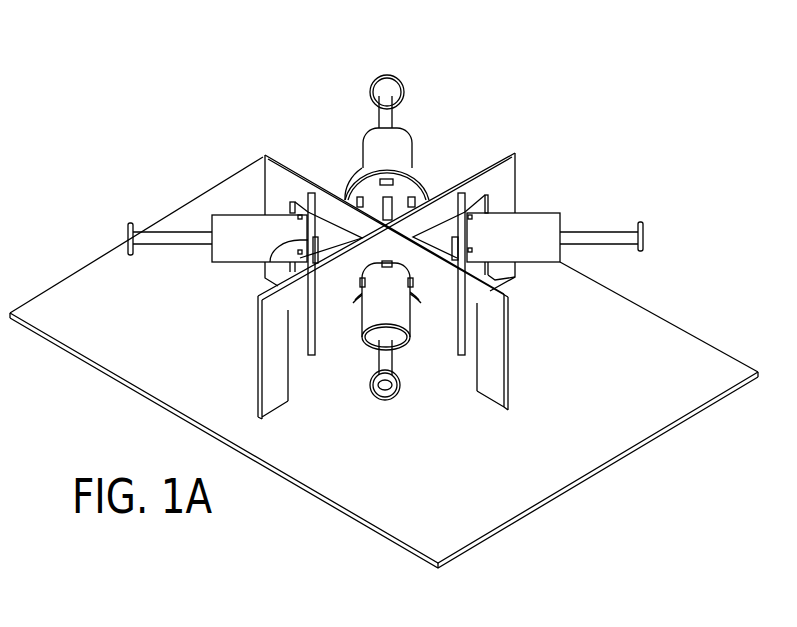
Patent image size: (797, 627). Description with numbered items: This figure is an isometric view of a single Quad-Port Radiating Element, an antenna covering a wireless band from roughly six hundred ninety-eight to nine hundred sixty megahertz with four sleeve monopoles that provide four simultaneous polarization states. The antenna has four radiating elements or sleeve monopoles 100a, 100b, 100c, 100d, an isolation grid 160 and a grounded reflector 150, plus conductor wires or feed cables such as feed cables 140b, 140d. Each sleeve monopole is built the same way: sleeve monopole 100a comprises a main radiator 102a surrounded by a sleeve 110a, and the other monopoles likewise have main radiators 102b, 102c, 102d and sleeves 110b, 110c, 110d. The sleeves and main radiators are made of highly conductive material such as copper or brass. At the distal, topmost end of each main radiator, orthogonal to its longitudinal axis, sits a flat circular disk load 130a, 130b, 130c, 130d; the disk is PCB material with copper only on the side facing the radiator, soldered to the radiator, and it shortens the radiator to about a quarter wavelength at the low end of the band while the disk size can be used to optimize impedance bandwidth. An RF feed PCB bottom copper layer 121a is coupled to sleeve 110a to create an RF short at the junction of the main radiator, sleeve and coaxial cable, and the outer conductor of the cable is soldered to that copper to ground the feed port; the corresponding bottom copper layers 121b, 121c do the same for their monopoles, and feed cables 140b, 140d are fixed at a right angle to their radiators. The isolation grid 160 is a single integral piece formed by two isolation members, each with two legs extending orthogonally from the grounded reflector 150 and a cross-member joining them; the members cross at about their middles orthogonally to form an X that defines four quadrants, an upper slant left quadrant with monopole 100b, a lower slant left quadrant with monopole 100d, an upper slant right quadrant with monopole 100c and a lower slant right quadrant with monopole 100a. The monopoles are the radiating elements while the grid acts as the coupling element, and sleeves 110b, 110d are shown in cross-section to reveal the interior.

The sleeve monopole 100a is at (384, 343).
The sleeve monopole 100b is at (212, 228).
The sleeve monopole 100c is at (388, 110).
The sleeve monopole 100d is at (576, 241).
The main radiator 102a is at (378, 370).
The main radiator 102b is at (182, 233).
The main radiator 102c is at (392, 118).
The main radiator 102d is at (585, 228).
The sleeve 110a is at (413, 323).
The sleeve 110b is at (240, 215).
The sleeve 110c is at (378, 143).
The sleeve 110d is at (533, 247).
The RF feed bottom copper layer 121a is at (352, 296).
The RF feed bottom copper layer 121b is at (297, 243).
The RF feed bottom copper layer 121c is at (362, 180).
The disk load 130a is at (387, 440).
The disk load 130b is at (133, 254).
The disk load 130c is at (382, 78).
The disk load 130d is at (645, 250).
The feed cable 140b is at (288, 312).
The feed cable 140d is at (463, 340).
The grounded reflector 150 is at (625, 430).
The isolation grid 160 is at (490, 393).